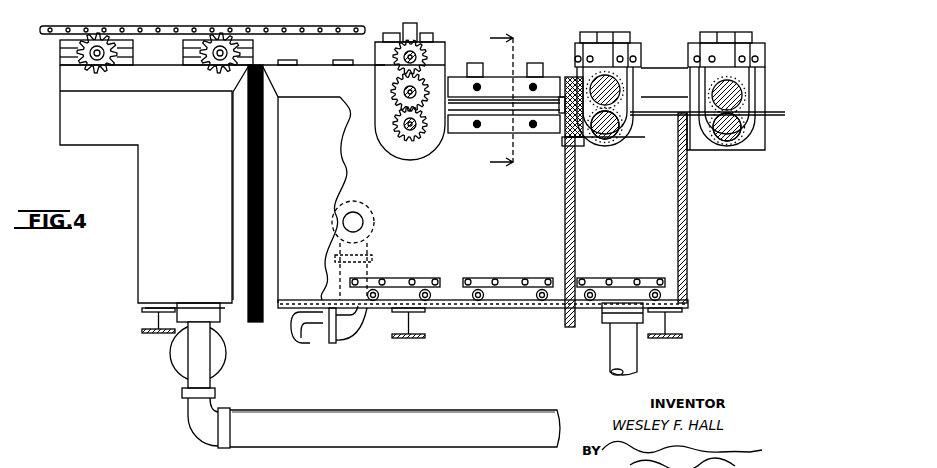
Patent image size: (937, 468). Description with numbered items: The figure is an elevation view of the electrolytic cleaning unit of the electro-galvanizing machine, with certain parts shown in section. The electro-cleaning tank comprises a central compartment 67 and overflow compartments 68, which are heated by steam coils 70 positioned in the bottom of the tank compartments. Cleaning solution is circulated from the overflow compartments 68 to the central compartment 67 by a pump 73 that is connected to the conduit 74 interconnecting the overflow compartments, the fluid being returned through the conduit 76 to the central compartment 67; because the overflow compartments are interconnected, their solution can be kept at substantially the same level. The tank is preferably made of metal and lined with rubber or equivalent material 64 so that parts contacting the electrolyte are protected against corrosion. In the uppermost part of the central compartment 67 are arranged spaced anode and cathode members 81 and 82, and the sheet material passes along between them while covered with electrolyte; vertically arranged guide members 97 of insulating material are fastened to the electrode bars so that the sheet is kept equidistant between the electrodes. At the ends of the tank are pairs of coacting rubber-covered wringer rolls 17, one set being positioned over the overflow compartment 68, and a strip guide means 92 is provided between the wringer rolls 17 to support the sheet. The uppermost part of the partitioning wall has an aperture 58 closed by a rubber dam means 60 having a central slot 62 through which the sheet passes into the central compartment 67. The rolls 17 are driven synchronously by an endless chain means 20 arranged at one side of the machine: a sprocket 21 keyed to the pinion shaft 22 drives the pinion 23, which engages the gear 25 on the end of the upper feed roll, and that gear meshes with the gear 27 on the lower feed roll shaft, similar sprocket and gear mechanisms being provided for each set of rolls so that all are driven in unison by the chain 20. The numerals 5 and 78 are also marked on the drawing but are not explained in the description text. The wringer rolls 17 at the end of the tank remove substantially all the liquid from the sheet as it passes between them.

The endless chain means 20 is at (278, 32).
The pinion shaft 22 is at (99, 48).
The sprocket 21 is at (108, 68).
The pinion 23 is at (424, 50).
The gear 25 is at (398, 100).
The gear 27 is at (401, 136).
The guide members 97 is at (467, 97).
The anode members 81 is at (550, 83).
The central slot 62 is at (537, 110).
The aperture 58 is at (565, 112).
The section line 5- 5 is at (495, 101).
The rubber lining 64 is at (577, 192).
The rubber dam means 60 is at (590, 143).
The rolls 17 is at (613, 117).
The strip guide means 92 is at (675, 113).
The overflow compartments 68 is at (665, 243).
The cathode members 82 is at (353, 126).
The pipe fitting 78 is at (352, 222).
The steam coils 70 is at (455, 285).
The central compartment 67 is at (517, 262).
The pump 73 is at (220, 360).
The conduit 74 is at (344, 412).
The conduit 76 is at (300, 333).